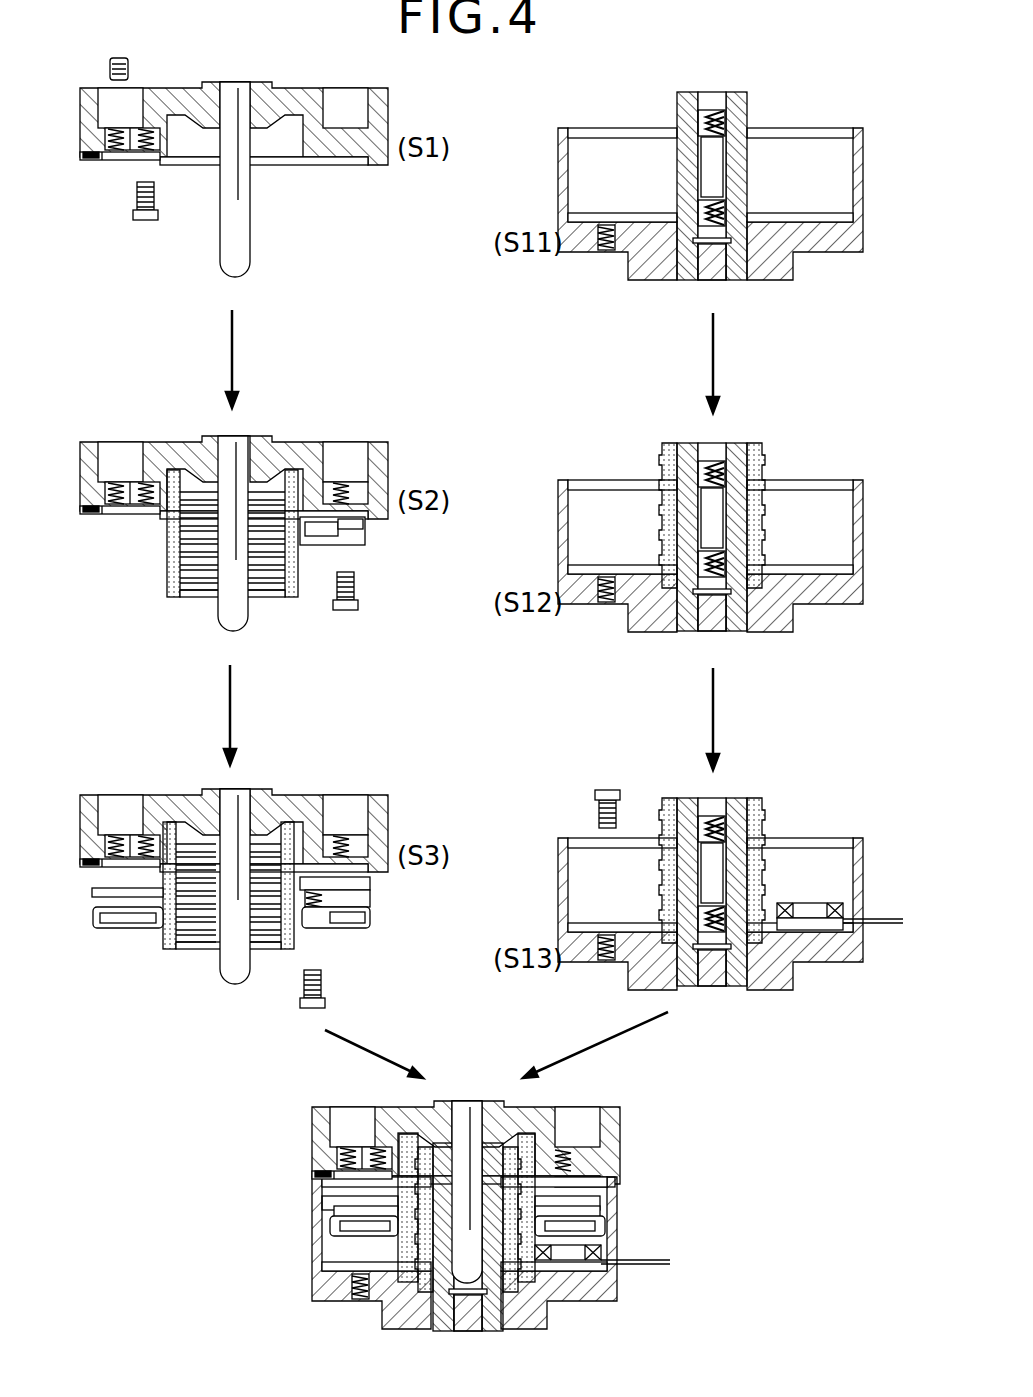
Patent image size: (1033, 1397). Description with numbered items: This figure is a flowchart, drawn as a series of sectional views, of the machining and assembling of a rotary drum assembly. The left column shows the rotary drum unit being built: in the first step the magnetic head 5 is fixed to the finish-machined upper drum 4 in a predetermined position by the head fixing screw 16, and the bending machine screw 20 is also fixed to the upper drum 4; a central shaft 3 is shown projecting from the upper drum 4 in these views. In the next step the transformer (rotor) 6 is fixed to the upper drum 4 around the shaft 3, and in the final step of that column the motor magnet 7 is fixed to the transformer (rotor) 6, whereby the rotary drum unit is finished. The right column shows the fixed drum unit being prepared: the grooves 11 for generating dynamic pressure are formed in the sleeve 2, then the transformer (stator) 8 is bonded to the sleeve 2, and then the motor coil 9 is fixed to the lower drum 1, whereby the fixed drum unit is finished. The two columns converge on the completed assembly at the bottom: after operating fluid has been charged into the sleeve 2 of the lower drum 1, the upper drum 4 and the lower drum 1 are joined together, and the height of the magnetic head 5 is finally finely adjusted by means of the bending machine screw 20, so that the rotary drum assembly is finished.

The lower drum 1 is at (865, 160).
The sleeve 2 is at (748, 117).
The shaft 3 is at (253, 218).
The upper drum 4 is at (281, 98).
The magnetic head 5 is at (100, 170).
The transformer (rotor) 6 is at (170, 548).
The motor magnet 7 is at (120, 930).
The transformer (stator) 8 is at (765, 470).
The motor coil 9 is at (828, 900).
The grooves 11 is at (712, 108).
The head fixing screw 16 is at (145, 222).
The bending machine screw 20 is at (121, 55).